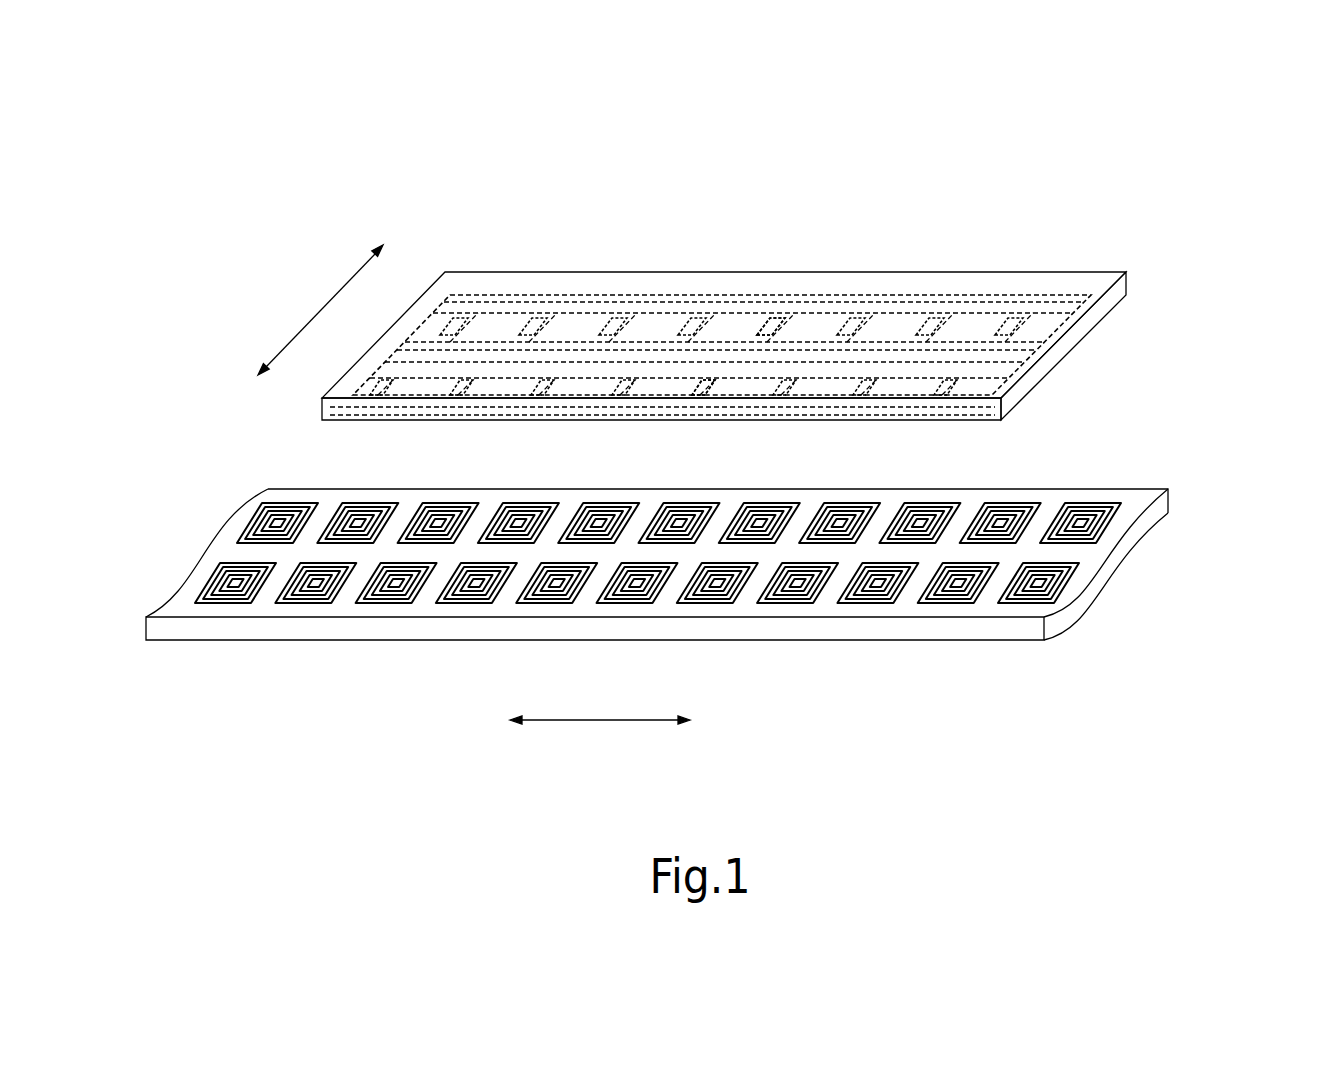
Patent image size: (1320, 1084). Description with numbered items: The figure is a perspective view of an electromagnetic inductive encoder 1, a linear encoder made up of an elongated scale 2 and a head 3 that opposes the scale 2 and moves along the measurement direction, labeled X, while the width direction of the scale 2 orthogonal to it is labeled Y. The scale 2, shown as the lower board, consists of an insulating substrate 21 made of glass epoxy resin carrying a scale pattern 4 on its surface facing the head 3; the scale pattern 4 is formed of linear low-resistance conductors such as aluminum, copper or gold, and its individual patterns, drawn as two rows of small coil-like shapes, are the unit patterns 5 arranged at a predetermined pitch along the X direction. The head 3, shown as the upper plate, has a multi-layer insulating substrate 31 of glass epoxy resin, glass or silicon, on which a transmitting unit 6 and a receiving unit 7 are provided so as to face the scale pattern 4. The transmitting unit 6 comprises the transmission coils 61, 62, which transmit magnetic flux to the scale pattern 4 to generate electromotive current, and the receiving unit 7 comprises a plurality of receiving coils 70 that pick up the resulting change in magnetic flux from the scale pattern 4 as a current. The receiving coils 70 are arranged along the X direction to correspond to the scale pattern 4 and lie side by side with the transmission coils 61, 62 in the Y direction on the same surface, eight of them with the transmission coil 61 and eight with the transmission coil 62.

The electromagnetic inductive encoder 1 is at (1200, 180).
The scale 2 is at (1131, 478).
The insulating substrate 21 is at (698, 641).
The head 3 is at (1036, 262).
The multi-layer insulating substrate 31 is at (480, 272).
The scale pattern 4 is at (758, 622).
The unit pattern 5 is at (236, 603).
The transmitting unit 6 is at (784, 333).
The transmission coil 61 is at (777, 318).
The transmission coil 62 is at (700, 398).
The receiving unit 7 is at (668, 328).
The receiving coil 70 is at (460, 318).